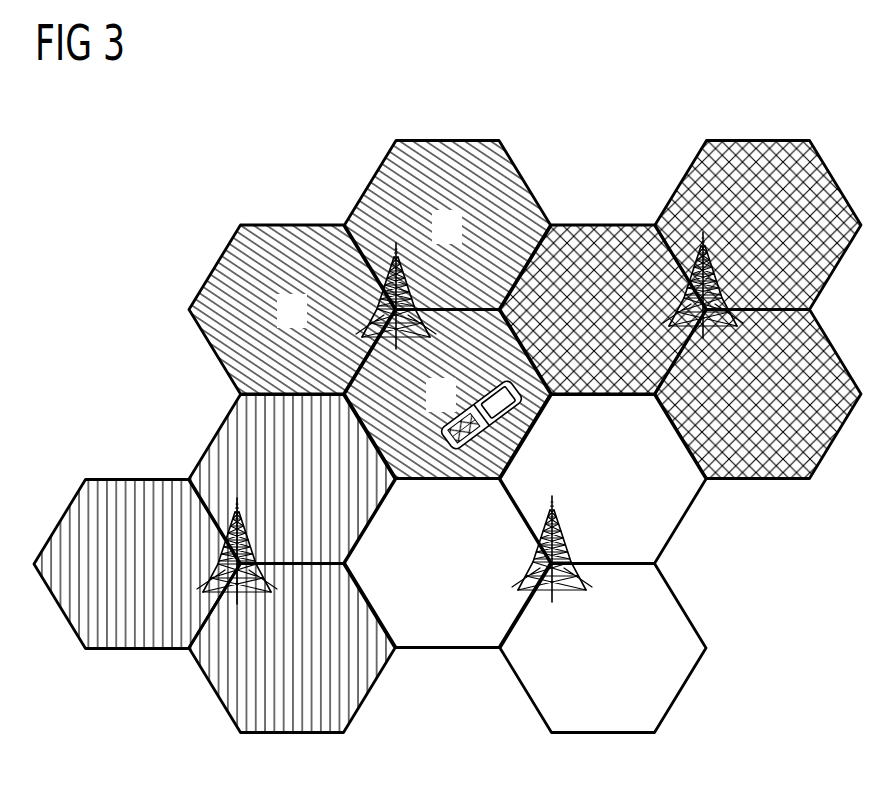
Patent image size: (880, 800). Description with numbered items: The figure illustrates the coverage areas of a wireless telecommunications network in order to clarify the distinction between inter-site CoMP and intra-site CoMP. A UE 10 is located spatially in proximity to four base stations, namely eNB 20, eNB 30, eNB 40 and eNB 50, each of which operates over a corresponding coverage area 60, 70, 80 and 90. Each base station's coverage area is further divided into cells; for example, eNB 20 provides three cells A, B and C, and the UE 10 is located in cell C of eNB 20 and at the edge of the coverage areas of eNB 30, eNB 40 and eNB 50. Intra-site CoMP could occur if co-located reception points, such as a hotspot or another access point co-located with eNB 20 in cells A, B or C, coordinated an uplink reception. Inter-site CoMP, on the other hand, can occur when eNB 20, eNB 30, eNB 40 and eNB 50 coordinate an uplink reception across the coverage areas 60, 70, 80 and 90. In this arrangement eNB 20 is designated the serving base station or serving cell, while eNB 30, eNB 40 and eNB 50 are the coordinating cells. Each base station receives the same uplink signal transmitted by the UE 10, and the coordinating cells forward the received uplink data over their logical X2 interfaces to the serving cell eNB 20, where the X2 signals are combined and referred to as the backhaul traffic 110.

The UE 10 is at (483, 392).
The eNB 20 is at (410, 290).
The eNB 30 is at (714, 270).
The eNB 40 is at (567, 542).
The eNB 50 is at (250, 540).
The coverage area 60 is at (682, 183).
The coverage area 70 is at (683, 603).
The coverage area 80 is at (140, 478).
The coverage area 90 is at (215, 267).
The backhaul traffic 110 is at (641, 104).